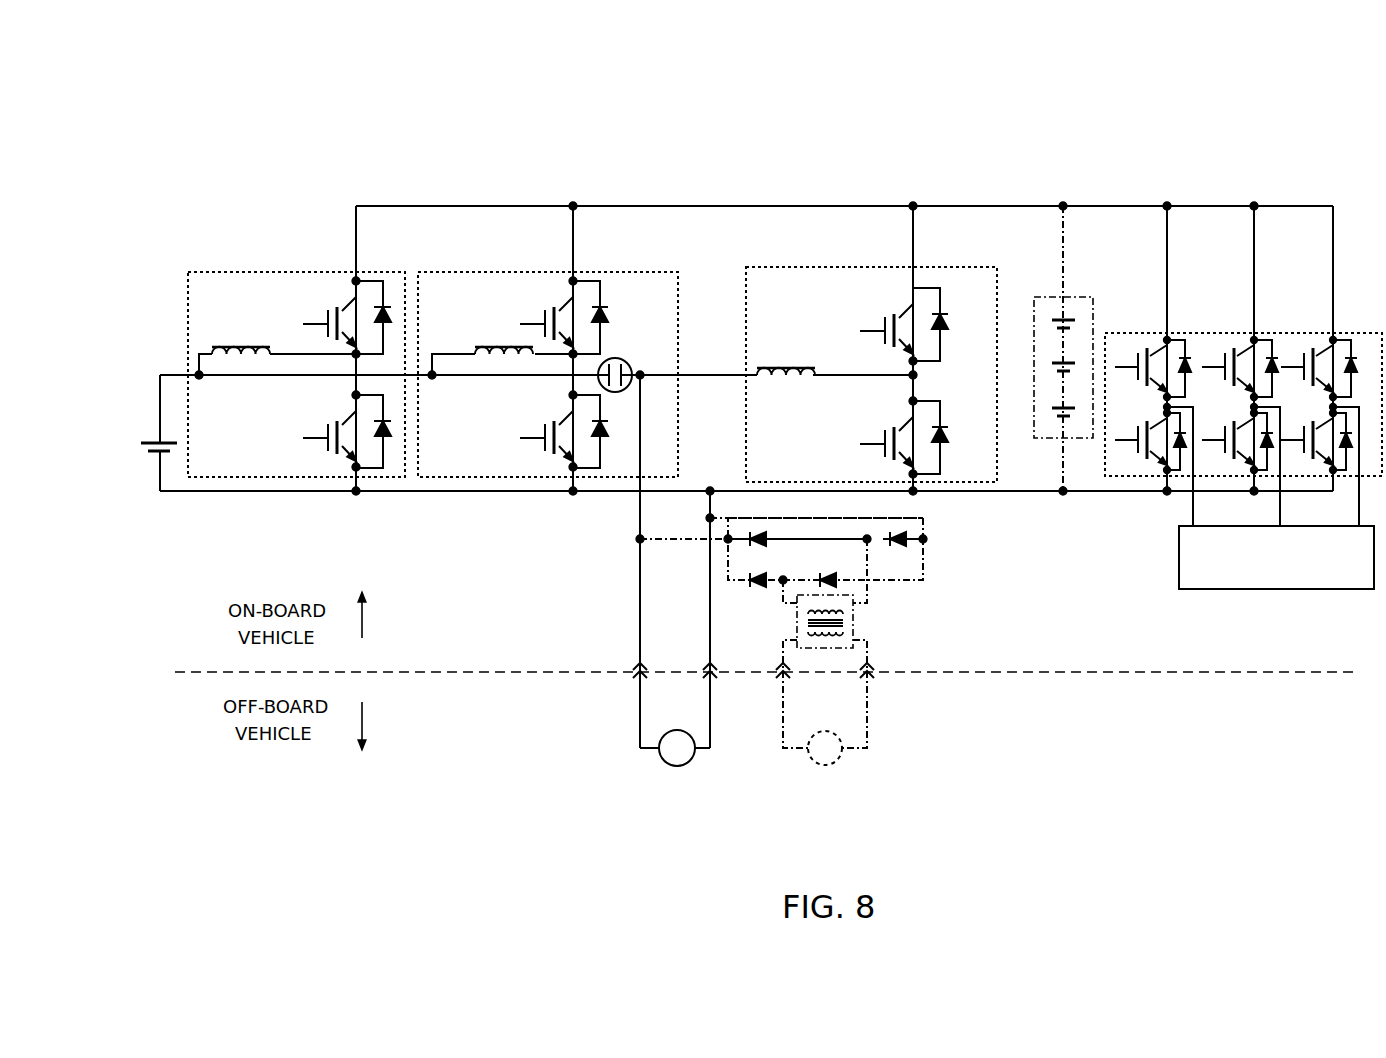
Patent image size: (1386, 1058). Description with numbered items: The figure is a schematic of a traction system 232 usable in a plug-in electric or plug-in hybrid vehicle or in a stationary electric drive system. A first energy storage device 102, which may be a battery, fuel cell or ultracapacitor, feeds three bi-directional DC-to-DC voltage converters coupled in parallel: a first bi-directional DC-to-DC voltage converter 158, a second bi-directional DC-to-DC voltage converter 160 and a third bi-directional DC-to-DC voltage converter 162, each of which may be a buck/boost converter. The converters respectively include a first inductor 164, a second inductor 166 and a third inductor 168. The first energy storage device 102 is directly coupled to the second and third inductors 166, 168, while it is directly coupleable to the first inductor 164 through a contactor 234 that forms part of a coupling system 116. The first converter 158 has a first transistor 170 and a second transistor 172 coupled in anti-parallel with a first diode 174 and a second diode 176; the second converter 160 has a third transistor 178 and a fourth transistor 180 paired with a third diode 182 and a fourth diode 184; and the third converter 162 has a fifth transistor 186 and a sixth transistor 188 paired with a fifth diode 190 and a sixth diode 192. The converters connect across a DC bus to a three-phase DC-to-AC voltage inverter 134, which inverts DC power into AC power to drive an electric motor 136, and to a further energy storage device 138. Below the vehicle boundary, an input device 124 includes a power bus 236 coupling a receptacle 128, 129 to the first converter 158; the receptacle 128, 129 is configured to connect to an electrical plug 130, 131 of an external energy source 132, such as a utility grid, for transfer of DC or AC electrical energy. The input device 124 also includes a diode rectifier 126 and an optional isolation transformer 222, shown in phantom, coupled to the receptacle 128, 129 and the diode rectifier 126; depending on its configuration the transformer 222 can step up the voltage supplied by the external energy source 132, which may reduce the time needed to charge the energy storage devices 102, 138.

The traction system 232 is at (765, 167).
The first energy storage device 102 is at (152, 442).
The third bi-directional DC-to-DC voltage converter 162 is at (233, 272).
The second bi-directional DC-to-DC voltage converter 160 is at (518, 272).
The first bi-directional DC-to-DC voltage converter 158 is at (800, 267).
The third inductor 168 is at (225, 345).
The second inductor 166 is at (480, 350).
The first inductor 164 is at (765, 368).
The fifth transistor 186 is at (313, 323).
The sixth transistor 188 is at (313, 436).
The third transistor 178 is at (530, 322).
The fourth transistor 180 is at (530, 433).
The first transistor 170 is at (873, 330).
The second transistor 172 is at (874, 442).
The fifth diode 190 is at (390, 317).
The sixth diode 192 is at (382, 445).
The third diode 182 is at (604, 318).
The fourth diode 184 is at (600, 444).
The first diode 174 is at (945, 326).
The second diode 176 is at (946, 440).
The contactor 234 is at (629, 362).
The coupling system 116 is at (633, 393).
The energy storage device 138 is at (1040, 438).
The three-phase DC-to-AC voltage inverter 134 is at (1131, 333).
The electric motor 136 is at (1179, 566).
The power bus 236 is at (640, 520).
The diode rectifier 126 is at (935, 547).
The transformer 222 is at (867, 620).
The receptacle 128 is at (637, 668).
The receptacle 129 is at (707, 668).
The electrical plug 130 is at (638, 680).
The electrical plug 131 is at (706, 680).
The external energy source 132 is at (685, 765).
The input device 124 is at (562, 705).